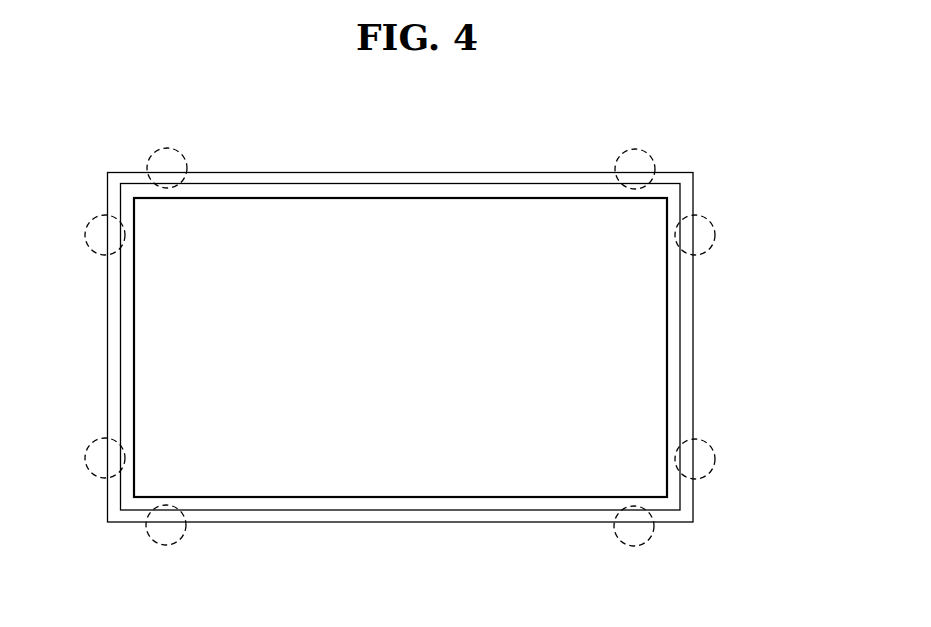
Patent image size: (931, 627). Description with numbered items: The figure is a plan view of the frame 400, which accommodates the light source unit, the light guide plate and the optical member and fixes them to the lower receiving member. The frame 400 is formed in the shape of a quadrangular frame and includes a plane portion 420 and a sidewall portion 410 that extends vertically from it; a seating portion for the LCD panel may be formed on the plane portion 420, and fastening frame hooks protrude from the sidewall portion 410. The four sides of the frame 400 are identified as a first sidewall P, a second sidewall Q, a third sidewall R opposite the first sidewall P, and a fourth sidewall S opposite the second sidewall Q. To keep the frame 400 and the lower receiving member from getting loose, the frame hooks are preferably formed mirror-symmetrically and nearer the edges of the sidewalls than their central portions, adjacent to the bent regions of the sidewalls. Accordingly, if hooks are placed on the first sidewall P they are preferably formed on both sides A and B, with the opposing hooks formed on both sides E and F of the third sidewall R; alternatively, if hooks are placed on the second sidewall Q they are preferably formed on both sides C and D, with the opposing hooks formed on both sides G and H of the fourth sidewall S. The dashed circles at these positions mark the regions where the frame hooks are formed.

The frame 400 is at (454, 312).
The sidewall portion 410 is at (687, 410).
The plane portion 420 is at (673, 383).
The side of first sidewall A is at (95, 236).
The side of first sidewall B is at (95, 456).
The side of second sidewall C is at (167, 157).
The side of second sidewall D is at (634, 157).
The side of third sidewall E is at (706, 458).
The side of third sidewall F is at (706, 236).
The side of fourth sidewall G is at (634, 538).
The side of fourth sidewall H is at (167, 538).
The first sidewall P is at (91, 364).
The second sidewall Q is at (396, 170).
The third sidewall R is at (702, 335).
The fourth sidewall S is at (388, 533).